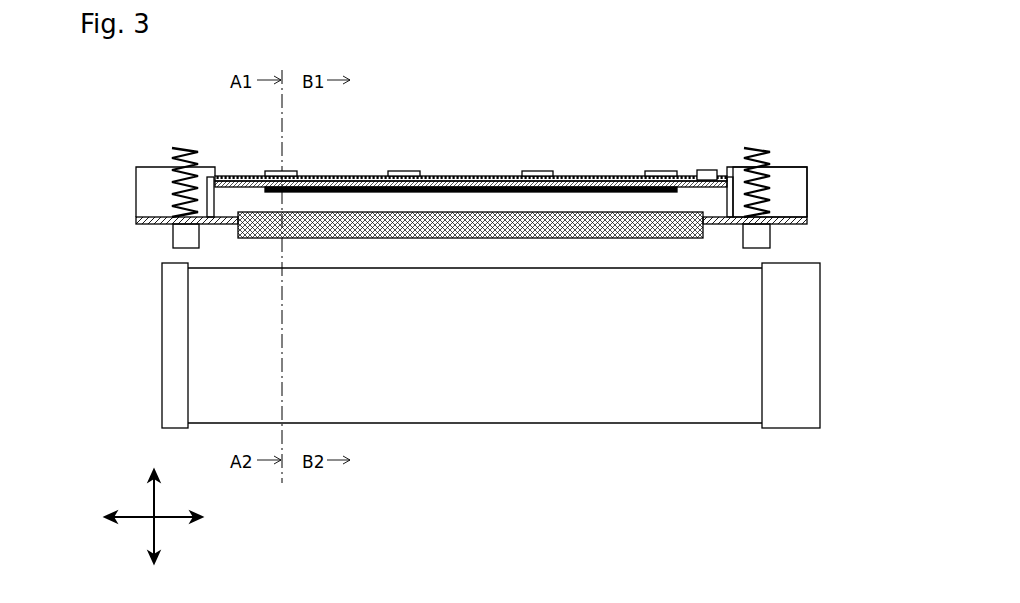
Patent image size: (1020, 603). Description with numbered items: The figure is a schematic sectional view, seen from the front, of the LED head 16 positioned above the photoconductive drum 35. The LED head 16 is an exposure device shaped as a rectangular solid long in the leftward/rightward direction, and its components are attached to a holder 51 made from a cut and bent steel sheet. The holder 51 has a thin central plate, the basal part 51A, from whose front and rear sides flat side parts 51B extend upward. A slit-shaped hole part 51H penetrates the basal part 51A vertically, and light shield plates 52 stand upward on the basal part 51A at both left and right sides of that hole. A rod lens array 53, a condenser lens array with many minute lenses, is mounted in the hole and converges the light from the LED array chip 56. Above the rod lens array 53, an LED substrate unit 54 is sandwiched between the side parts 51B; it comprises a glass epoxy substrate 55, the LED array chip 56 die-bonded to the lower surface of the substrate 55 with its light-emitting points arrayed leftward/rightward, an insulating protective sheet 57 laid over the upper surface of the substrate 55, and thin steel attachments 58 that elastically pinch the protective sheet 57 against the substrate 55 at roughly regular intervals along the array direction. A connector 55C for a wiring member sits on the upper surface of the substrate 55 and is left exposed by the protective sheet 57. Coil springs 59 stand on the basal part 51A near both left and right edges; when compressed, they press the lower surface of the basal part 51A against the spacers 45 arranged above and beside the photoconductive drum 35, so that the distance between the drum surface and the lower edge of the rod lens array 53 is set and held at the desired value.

The LED head 16 is at (117, 115).
The photoconductive drum 35 is at (603, 382).
The spacers 45 is at (183, 243).
The holder 51 is at (788, 167).
The basal part 51A is at (795, 224).
The side parts 51B is at (807, 193).
The hole in holder 51H is at (221, 243).
The light shield plates 52 is at (210, 177).
The rod lens array 53 is at (450, 238).
The LED substrate unit 54 is at (467, 176).
The substrate 55 is at (617, 176).
The connector 55C is at (705, 170).
The LED array chip 56 is at (497, 192).
The protective sheet 57 is at (373, 176).
The attachments 58 is at (290, 171).
The coil springs 59 is at (183, 148).